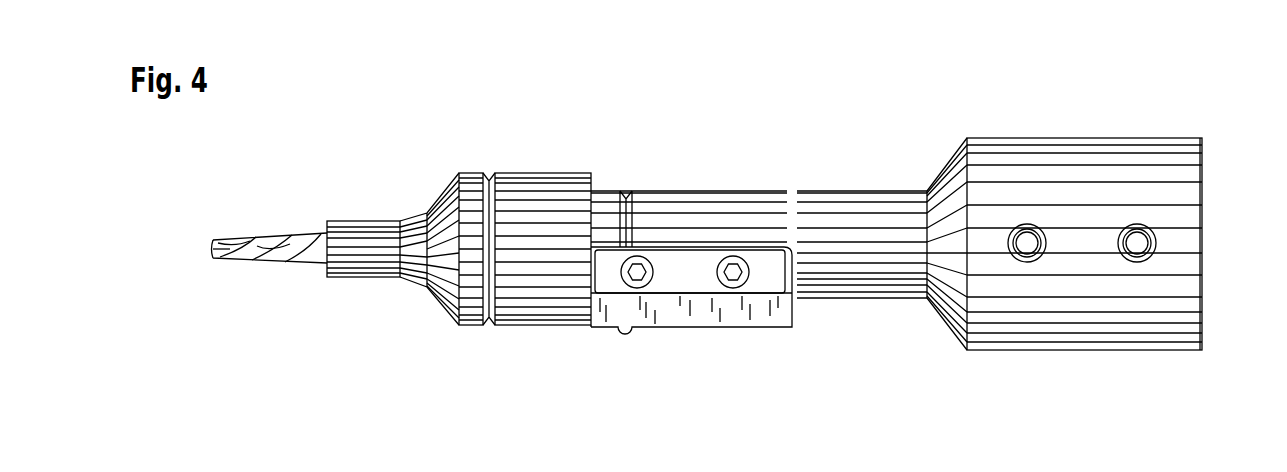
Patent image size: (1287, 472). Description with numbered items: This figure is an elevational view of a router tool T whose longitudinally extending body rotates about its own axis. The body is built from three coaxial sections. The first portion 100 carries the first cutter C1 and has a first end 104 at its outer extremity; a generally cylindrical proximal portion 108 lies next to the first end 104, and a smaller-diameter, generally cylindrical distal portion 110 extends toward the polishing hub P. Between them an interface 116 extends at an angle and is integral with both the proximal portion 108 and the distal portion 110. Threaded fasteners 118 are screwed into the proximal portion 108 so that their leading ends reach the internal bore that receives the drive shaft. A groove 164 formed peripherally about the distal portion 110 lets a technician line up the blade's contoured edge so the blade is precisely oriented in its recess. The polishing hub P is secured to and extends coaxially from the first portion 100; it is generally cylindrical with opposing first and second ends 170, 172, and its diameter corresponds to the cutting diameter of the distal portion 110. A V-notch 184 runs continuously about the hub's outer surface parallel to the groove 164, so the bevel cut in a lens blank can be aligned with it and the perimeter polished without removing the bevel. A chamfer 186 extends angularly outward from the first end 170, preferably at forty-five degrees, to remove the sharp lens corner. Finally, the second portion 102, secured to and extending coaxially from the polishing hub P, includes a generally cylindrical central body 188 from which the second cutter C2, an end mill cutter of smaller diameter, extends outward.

The tool T is at (843, 118).
The first portion 100 is at (800, 165).
The second portion 102 is at (358, 198).
The first end 104 is at (1205, 228).
The proximal portion 108 is at (1085, 160).
The distal portion 110 is at (787, 200).
The interface 116 is at (942, 178).
The threaded fasteners 118 is at (1137, 250).
The groove 164 is at (626, 185).
The first end 170 is at (415, 240).
The second end 172 is at (592, 173).
The V-notch 184 is at (489, 330).
The chamfer 186 is at (440, 305).
The central body 188 is at (353, 258).
The polishing hub P is at (510, 150).
The first cutter C1 is at (735, 338).
The second cutter C2 is at (256, 232).